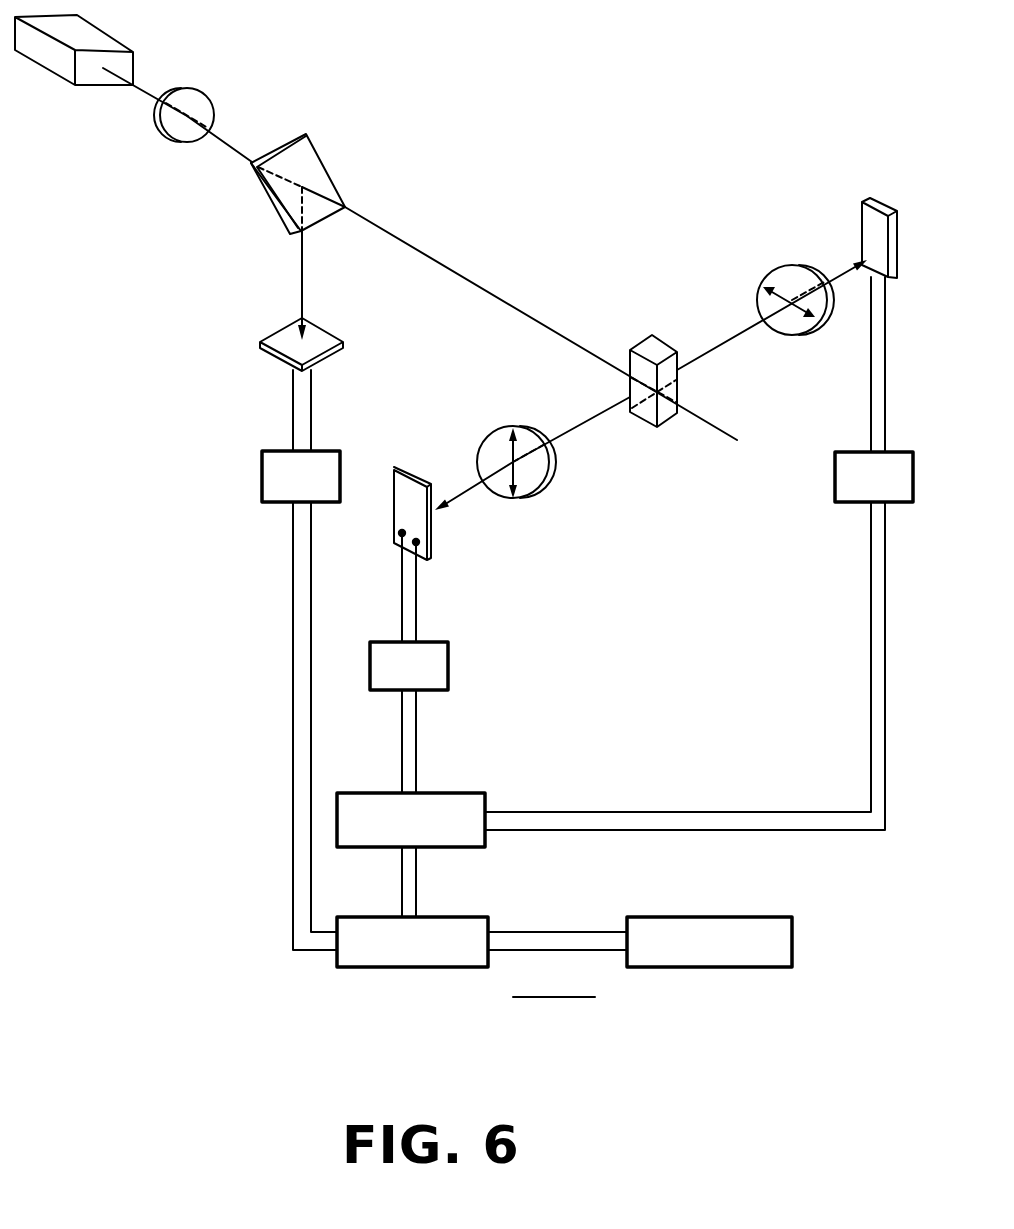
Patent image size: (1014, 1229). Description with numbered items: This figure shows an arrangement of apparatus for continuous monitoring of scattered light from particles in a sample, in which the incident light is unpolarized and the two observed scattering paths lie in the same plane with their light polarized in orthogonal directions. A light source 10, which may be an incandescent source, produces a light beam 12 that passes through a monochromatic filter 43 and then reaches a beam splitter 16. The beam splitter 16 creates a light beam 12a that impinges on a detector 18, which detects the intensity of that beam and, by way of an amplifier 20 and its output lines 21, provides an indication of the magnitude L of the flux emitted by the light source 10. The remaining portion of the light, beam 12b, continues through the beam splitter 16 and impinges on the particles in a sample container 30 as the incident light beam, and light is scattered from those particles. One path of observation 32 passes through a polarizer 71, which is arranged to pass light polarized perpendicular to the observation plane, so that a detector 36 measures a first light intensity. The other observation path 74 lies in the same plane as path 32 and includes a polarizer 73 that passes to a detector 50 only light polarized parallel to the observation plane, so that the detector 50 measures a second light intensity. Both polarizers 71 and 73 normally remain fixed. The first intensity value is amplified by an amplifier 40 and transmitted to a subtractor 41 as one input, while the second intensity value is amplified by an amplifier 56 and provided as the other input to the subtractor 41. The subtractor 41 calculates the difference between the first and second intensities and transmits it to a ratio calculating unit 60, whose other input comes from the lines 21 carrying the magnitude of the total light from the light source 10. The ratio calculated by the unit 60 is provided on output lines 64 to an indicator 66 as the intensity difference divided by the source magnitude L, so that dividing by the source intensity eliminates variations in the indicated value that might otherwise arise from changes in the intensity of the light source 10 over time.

The light source 10 is at (42, 68).
The light beam 12 is at (150, 97).
The monochromatic filter 43 is at (207, 93).
The beam splitter 16 is at (268, 205).
The light beam 12a is at (303, 268).
The beam 12b is at (429, 262).
The detector 18 is at (338, 337).
The amplifier 20 is at (275, 451).
The output lines 21 is at (294, 726).
The sample container 30 is at (640, 345).
The path of observation 32 is at (586, 425).
The path 74 is at (722, 348).
The polarizer 71 is at (533, 500).
The polarizer 73 is at (787, 340).
The detector 36 is at (408, 468).
The detector 50 is at (860, 218).
The amplifier 40 is at (450, 655).
The amplifier 56 is at (853, 505).
The subtractor 41 is at (455, 793).
The ratio calculating unit 60 is at (362, 915).
The output lines 64 is at (580, 955).
The indicator 66 is at (750, 915).